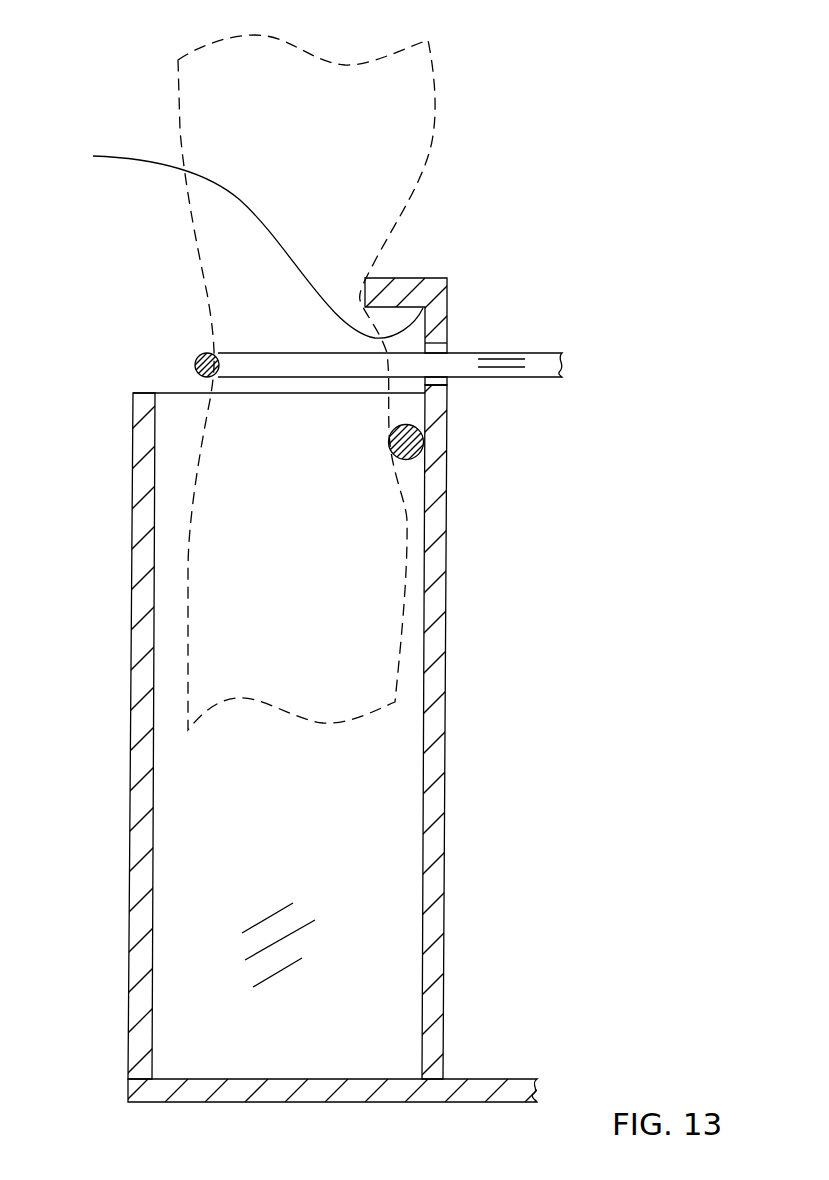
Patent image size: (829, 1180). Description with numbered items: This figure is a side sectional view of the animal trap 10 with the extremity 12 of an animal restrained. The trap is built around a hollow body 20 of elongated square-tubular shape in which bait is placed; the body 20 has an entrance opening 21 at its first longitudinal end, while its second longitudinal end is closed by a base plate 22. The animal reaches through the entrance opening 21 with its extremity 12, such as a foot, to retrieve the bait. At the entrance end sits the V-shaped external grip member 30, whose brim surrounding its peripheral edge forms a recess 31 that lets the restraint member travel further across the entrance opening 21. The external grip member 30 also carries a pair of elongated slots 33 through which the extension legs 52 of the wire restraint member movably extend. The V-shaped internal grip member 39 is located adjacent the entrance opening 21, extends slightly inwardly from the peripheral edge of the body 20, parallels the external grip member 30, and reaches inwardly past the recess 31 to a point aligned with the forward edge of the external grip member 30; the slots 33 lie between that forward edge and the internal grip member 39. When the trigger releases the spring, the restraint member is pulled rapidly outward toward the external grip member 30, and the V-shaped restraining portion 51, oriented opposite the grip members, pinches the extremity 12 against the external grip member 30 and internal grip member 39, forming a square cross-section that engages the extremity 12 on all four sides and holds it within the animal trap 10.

The animal trap 10 is at (535, 196).
The extremity 12 is at (207, 293).
The hollow body 20 is at (128, 927).
The entrance opening 21 is at (172, 393).
The base plate 22 is at (202, 1100).
The external grip member 30 is at (412, 278).
The recess 31 is at (236, 240).
The elongated slots 33 is at (444, 388).
The internal grip member 39 is at (422, 448).
The restraining portion 51 is at (193, 365).
The extension legs 52 is at (498, 355).